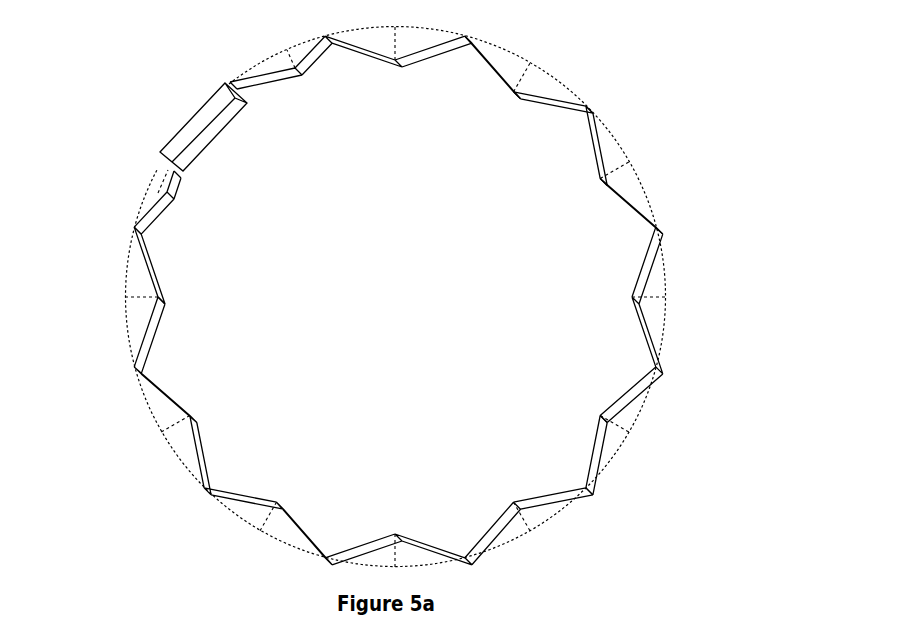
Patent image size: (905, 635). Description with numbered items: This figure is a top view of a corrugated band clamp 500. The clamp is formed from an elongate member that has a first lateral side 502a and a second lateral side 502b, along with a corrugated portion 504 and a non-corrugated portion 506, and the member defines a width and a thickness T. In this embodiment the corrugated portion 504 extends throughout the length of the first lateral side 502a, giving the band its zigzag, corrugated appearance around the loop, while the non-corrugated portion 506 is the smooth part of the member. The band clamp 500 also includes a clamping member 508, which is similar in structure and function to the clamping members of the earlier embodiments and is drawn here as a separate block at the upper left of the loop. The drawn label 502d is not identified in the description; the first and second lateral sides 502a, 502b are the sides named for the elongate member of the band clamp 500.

The corrugated band clamp 500 is at (618, 90).
The first lateral side 502a is at (490, 67).
The second lateral side 502b is at (637, 173).
The panel 502d is at (620, 448).
The corrugated portion 504 is at (602, 183).
The non-corrugated portion 506 is at (165, 440).
The clamping member 508 is at (190, 116).
The thickness T is at (112, 288).